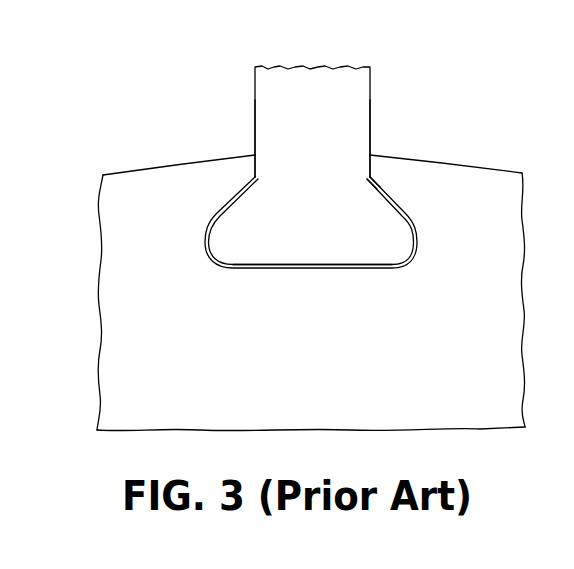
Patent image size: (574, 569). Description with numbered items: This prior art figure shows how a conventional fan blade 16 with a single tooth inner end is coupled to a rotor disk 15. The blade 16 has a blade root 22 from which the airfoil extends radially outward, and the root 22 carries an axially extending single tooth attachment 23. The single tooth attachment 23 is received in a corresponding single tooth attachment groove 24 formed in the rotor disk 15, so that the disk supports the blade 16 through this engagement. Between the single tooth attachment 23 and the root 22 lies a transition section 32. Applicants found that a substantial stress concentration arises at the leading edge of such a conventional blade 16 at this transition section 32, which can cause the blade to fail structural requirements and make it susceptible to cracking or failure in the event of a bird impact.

The rotor disk 15 is at (142, 277).
The blade 16 is at (249, 54).
The blade root 22 is at (340, 108).
The single tooth attachment 23 is at (352, 222).
The single tooth attachment groove 24 is at (230, 207).
The transition section 32 is at (373, 178).